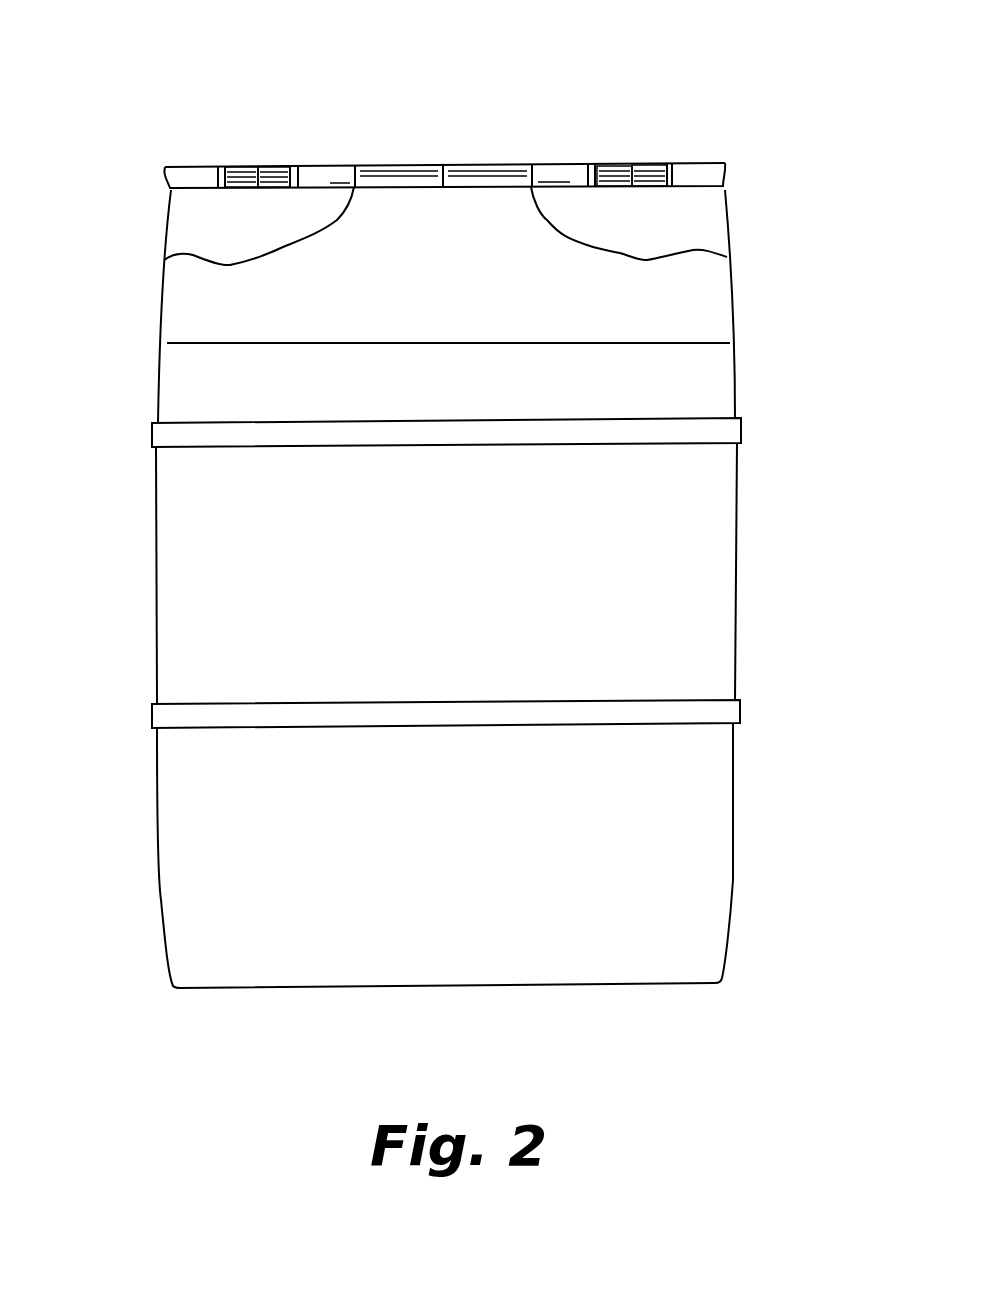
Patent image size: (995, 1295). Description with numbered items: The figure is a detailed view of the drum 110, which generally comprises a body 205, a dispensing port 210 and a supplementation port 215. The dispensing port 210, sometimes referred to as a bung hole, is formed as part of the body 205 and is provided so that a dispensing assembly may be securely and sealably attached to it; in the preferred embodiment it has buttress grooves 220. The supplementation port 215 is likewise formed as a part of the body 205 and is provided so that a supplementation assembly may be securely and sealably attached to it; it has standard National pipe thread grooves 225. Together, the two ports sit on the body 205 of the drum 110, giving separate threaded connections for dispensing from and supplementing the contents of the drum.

The drum 110 is at (92, 1063).
The body 205 is at (733, 843).
The dispensing port 210 is at (650, 160).
The supplementation port 215 is at (240, 162).
The buttress grooves 220 is at (615, 172).
The National pipe thread (NPT) grooves 225 is at (273, 172).